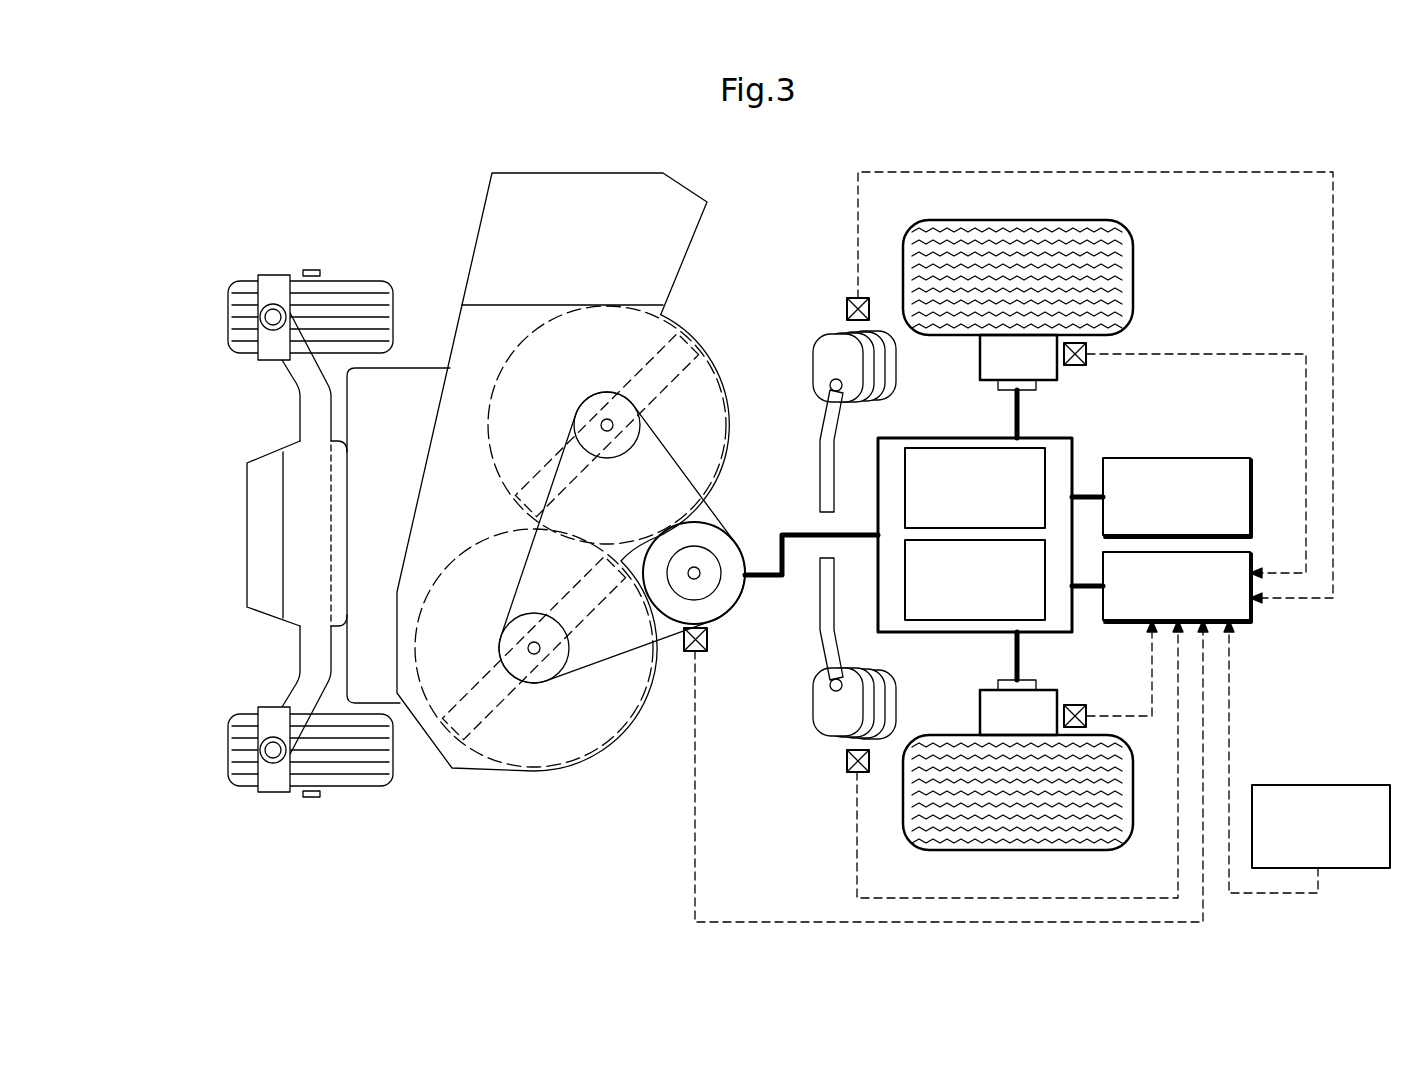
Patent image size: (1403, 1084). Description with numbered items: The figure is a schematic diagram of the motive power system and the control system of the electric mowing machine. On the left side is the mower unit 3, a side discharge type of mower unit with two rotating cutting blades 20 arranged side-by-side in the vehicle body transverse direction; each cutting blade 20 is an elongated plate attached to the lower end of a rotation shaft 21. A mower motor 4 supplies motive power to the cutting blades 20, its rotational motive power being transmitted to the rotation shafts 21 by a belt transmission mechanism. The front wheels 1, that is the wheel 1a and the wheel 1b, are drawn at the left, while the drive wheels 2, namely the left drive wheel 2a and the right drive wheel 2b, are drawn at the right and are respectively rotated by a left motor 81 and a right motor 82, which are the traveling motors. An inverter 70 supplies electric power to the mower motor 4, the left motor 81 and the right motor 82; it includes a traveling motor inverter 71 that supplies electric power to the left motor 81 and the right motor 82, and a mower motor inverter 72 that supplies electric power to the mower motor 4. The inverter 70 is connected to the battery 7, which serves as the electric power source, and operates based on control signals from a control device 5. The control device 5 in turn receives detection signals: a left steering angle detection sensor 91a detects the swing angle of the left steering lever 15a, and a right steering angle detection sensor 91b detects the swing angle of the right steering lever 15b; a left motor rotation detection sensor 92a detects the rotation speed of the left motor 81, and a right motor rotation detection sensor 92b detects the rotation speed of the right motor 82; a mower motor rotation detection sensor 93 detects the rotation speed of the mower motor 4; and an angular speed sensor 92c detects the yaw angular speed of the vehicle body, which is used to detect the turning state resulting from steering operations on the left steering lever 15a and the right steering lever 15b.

The front wheels 1 is at (251, 533).
The front wheel (left) 1a is at (228, 751).
The front wheel (right) 1b is at (228, 316).
The rear wheels 2 is at (1018, 539).
The left drive wheel 2a is at (1005, 850).
The right drive wheel 2b is at (1005, 220).
The mower unit 3 is at (433, 741).
The mower motor 4 is at (729, 613).
The control device 5 is at (1250, 620).
The battery 7 is at (1250, 497).
The left steering lever 15a is at (836, 610).
The right steering lever 15b is at (836, 456).
The cutting blade 20 is at (548, 460).
The rotation shaft 21 is at (607, 418).
The inverter 70 is at (979, 539).
The traveling motor inverter 71 is at (1046, 460).
The mower motor inverter 72 is at (944, 622).
The left motor 81 is at (980, 712).
The right motor 82 is at (980, 358).
The left steering angle detection sensor 91a is at (845, 760).
The right steering angle detection sensor 91b is at (845, 310).
The left motor rotation detection sensor 92a is at (1086, 708).
The right motor rotation detection sensor 92b is at (1078, 366).
The angular speed sensor 92c is at (1322, 785).
The mower motor rotation detection sensor 93 is at (688, 651).